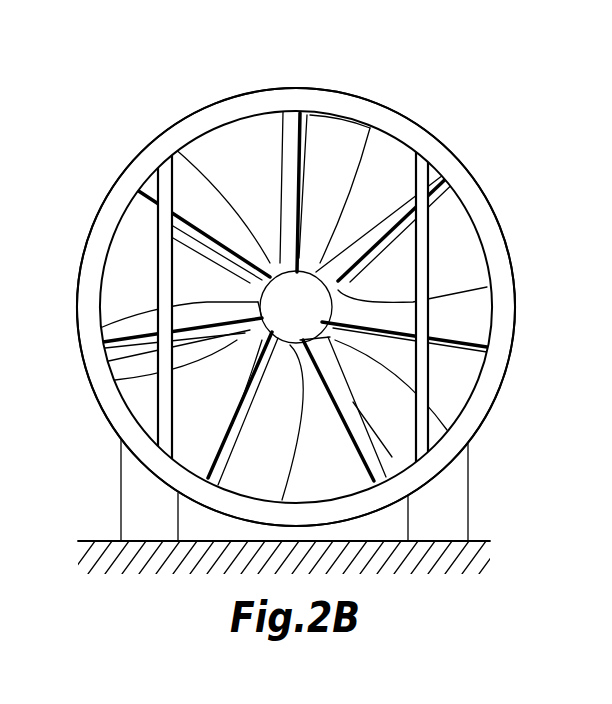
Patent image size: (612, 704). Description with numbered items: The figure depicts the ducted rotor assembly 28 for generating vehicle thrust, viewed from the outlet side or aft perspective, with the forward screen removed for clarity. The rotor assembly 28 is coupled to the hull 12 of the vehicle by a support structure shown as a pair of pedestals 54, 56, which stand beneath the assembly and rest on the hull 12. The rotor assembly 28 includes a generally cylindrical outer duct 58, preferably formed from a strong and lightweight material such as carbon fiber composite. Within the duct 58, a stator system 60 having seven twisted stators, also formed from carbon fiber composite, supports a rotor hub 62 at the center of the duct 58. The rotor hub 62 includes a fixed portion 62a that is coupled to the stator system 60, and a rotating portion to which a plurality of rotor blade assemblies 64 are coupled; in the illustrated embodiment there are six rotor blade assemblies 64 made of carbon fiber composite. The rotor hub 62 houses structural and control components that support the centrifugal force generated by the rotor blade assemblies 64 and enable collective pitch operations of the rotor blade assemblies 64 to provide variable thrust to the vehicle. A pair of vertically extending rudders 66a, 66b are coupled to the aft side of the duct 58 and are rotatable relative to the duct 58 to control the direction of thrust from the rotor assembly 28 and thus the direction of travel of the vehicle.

The hull 12 is at (483, 540).
The rotor assembly 28 is at (397, 84).
The pedestal 54 is at (127, 481).
The pedestal 56 is at (462, 480).
The outer duct 58 is at (182, 122).
The stator system 60 is at (282, 133).
The rotor hub 62 is at (258, 297).
The fixed portion 62a is at (258, 340).
The rotor blade assembly 64 is at (470, 276).
The rudder 66a is at (425, 173).
The rudder 66b is at (165, 173).